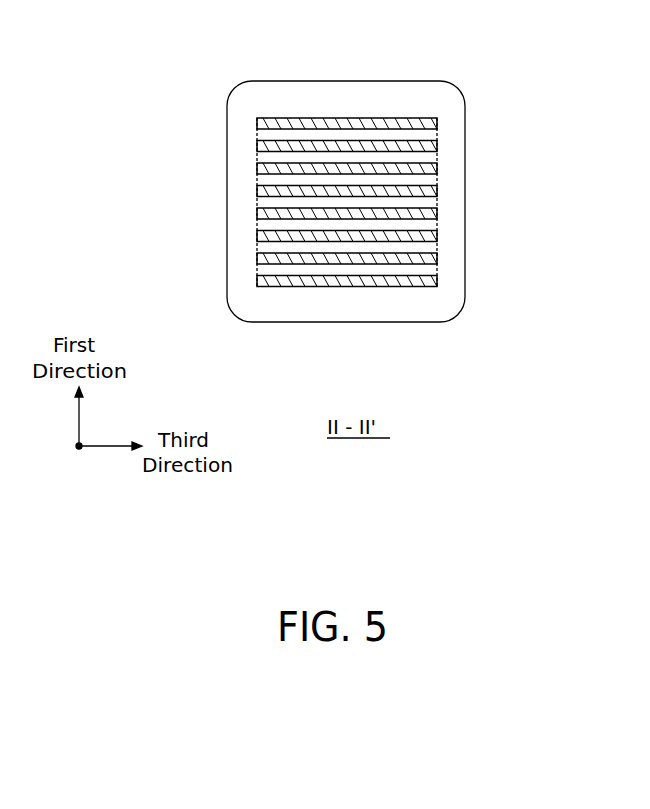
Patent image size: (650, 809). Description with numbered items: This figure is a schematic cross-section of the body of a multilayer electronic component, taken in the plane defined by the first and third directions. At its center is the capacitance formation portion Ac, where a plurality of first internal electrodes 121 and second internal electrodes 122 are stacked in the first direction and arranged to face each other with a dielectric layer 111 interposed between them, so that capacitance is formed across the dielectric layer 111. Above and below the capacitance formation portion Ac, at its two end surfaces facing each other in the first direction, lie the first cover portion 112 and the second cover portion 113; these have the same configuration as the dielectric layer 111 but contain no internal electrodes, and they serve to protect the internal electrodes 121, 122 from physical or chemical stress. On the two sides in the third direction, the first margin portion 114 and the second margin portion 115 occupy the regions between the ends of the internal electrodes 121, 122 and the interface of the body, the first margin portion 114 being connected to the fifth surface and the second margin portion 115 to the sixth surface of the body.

The dielectric layer 111 is at (435, 133).
The first cover portion 112 is at (342, 81).
The second cover portion 113 is at (341, 322).
The first margin portion 114 is at (227, 228).
The second margin portion 115 is at (465, 231).
The first internal electrode 121 is at (433, 122).
The second internal electrode 122 is at (435, 145).
The capacitance formation portion Ac is at (260, 203).